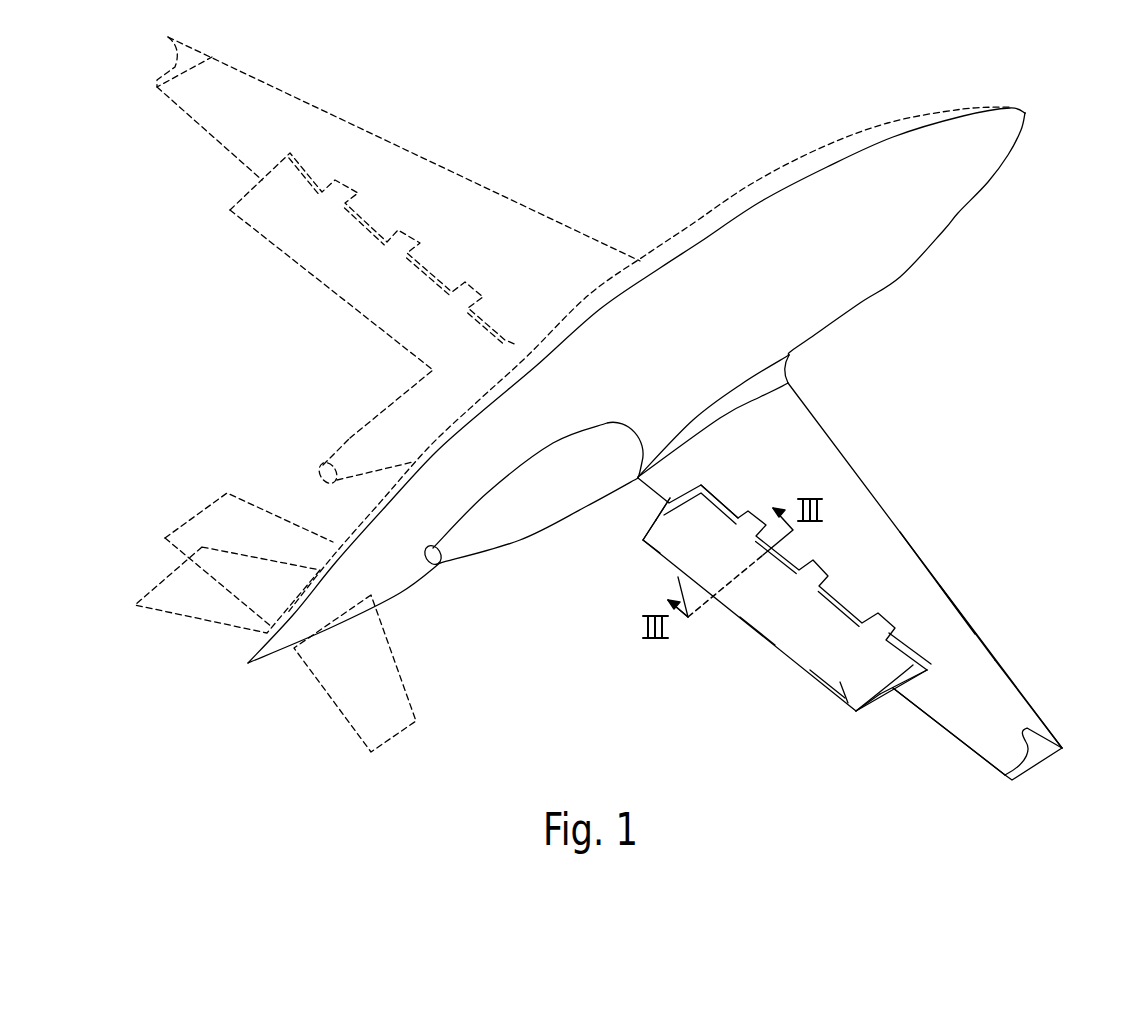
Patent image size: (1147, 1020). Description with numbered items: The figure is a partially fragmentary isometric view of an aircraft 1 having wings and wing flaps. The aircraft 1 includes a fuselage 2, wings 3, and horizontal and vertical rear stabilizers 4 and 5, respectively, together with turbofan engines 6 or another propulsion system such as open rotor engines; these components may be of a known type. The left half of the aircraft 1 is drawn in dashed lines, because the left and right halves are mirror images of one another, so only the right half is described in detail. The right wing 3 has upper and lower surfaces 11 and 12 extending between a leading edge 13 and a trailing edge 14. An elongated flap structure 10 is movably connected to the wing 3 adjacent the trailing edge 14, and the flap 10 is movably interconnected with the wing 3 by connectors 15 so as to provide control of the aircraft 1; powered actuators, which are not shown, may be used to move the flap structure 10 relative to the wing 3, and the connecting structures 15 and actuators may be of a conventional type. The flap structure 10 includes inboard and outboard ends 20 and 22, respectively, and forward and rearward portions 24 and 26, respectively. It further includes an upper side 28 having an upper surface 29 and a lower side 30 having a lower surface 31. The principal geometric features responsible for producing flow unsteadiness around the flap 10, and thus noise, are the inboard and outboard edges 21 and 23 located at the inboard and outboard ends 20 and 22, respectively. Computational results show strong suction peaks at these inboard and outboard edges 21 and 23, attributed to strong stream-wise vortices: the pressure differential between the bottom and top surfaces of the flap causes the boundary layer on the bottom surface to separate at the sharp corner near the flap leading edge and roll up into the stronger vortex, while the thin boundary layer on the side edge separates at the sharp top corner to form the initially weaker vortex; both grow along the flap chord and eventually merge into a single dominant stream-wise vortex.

The aircraft 1 is at (958, 230).
The fuselage 2 is at (877, 273).
The wing 3 is at (482, 181).
The horizontal rear stabilizer 4 is at (190, 617).
The vertical rear stabilizer 5 is at (200, 512).
The turbofan engine 6 is at (352, 436).
The flap structure 10 is at (800, 647).
The upper surface 11 is at (947, 615).
The lower surface 12 is at (987, 638).
The leading edge 13 is at (1025, 690).
The trailing edge 14 is at (963, 742).
The connector 15 is at (748, 513).
The inboard end 20 is at (647, 527).
The inboard edge 21 is at (648, 515).
The outboard end 22 is at (878, 699).
The outboard edge 23 is at (878, 698).
The forward portion 24 is at (792, 554).
The rearward portion 26 is at (763, 633).
The upper side 28 is at (833, 663).
The upper surface 29 is at (845, 690).
The lower side 30 is at (650, 550).
The lower surface 31 is at (678, 577).